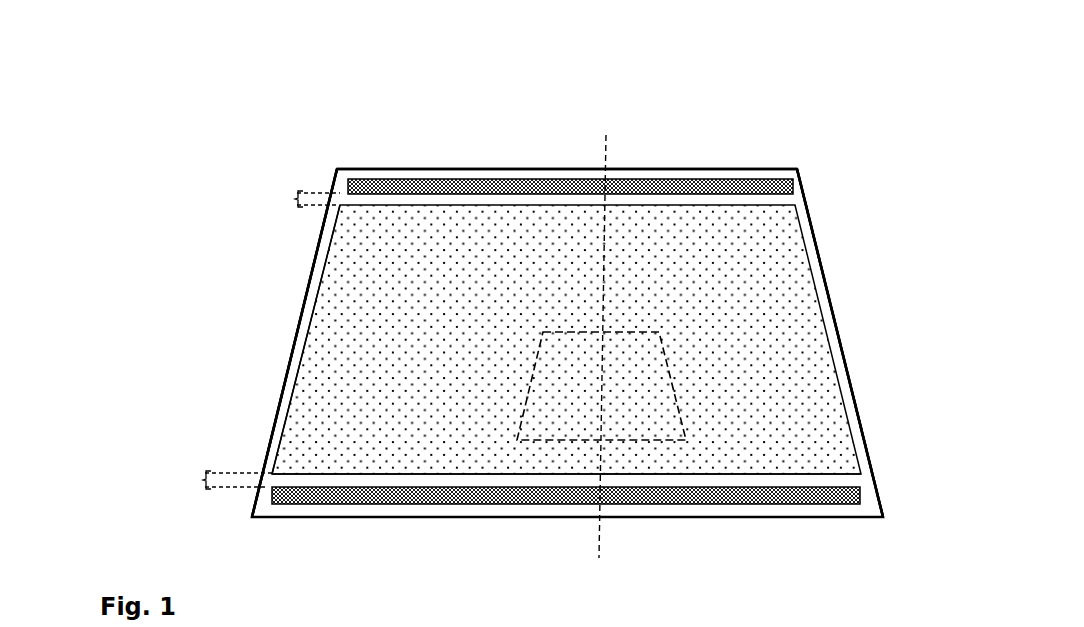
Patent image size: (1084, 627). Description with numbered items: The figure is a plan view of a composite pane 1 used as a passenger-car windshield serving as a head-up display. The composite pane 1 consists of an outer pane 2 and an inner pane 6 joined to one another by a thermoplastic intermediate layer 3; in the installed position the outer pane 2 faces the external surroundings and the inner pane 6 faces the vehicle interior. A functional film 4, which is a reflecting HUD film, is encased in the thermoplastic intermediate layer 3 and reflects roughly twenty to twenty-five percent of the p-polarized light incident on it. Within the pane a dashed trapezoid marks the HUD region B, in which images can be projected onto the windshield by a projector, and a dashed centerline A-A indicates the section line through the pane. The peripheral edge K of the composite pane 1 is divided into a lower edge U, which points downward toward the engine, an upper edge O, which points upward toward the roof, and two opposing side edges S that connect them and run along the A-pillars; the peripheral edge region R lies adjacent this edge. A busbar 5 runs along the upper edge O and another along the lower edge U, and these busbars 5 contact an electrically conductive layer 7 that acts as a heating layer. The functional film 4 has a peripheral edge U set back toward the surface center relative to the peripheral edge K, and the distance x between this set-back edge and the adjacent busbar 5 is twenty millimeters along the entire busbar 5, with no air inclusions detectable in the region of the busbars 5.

The composite pane 1 is at (584, 280).
The outer pane 2 is at (584, 325).
The thermoplastic intermediate layer 3 is at (584, 325).
The functional film 4 is at (789, 265).
The busbar 5 is at (505, 188).
The inner pane 6 is at (584, 325).
The electrically conductive layer 7 is at (793, 200).
The section line A-A' A is at (603, 349).
The HUD region B is at (660, 375).
The peripheral edge of the composite pane K is at (261, 433).
The upper edge O is at (709, 144).
The peripheral edge region R is at (855, 430).
The side edges S is at (277, 308).
The lower edge U is at (289, 367).
The distance x is at (260, 340).